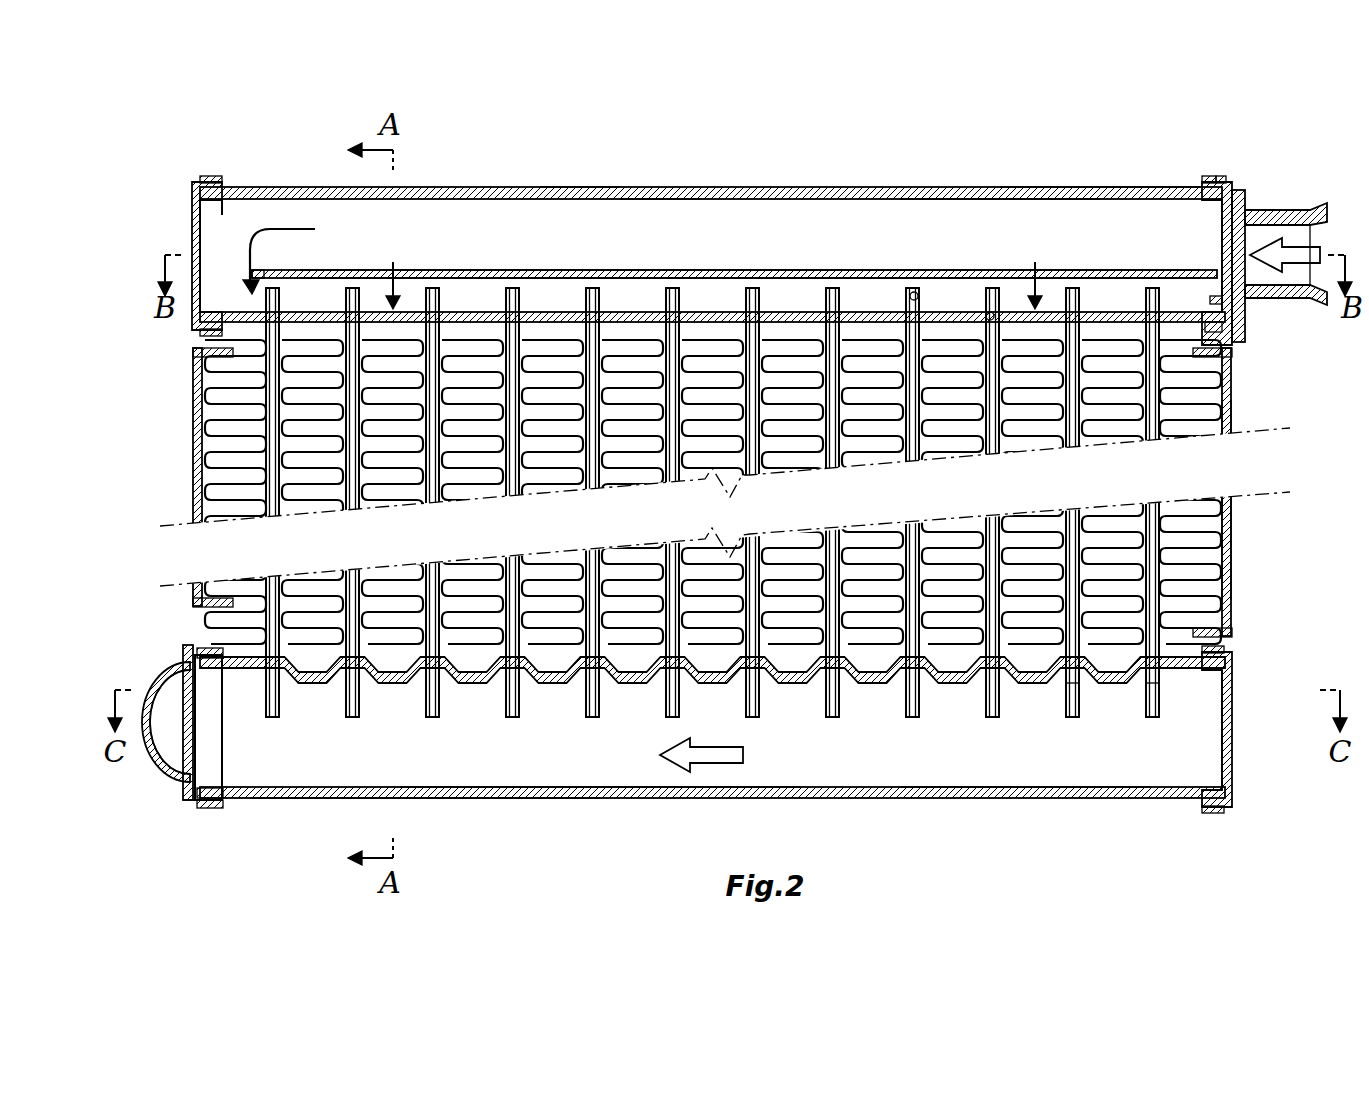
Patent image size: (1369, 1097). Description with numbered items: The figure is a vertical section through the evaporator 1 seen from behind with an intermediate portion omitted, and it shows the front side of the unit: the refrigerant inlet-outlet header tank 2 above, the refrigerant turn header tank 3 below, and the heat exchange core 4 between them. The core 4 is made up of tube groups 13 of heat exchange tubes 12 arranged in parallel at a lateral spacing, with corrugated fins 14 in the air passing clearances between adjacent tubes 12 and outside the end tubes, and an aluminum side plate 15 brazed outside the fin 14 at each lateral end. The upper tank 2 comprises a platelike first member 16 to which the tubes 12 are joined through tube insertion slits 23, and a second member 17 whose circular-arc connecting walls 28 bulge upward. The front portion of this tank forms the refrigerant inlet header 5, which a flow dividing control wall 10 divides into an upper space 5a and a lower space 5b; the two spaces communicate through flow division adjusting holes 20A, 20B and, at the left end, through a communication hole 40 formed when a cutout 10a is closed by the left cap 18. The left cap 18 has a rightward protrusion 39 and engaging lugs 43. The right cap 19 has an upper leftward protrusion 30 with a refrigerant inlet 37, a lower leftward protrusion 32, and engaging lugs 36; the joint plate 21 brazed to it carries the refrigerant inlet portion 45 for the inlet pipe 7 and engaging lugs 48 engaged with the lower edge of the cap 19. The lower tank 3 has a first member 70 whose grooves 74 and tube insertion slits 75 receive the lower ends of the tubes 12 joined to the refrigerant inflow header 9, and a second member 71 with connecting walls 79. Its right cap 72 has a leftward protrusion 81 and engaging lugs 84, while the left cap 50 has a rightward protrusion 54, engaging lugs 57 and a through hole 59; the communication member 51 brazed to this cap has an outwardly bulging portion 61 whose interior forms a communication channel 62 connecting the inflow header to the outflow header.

The evaporator 1 is at (1052, 155).
The refrigerant inlet-outlet header tank 2 is at (790, 187).
The refrigerant turn header tank 3 is at (562, 818).
The heat exchange core 4 is at (1214, 574).
The refrigerant inlet header 5 is at (477, 256).
The upper space 5a is at (652, 200).
The lower space 5b is at (535, 290).
The refrigerant inlet pipe 7 is at (1318, 210).
The refrigerant inflow header 9 is at (562, 761).
The flow dividing control wall 10 is at (654, 270).
The cutout 10a is at (255, 272).
The heat exchange tubes 12 is at (832, 718).
The tube groups 13 is at (1288, 546).
The corrugated fins 14 is at (1195, 428).
The side plate 15 is at (194, 430).
The first member 16 is at (790, 323).
The second member 17 is at (962, 136).
The left cap 18 is at (197, 180).
The right cap 19 is at (1206, 178).
The flow division adjusting through hole 20A is at (380, 260).
The flow division adjusting through hole 20B is at (1045, 264).
The joint plate 21 is at (1241, 192).
The tube insertion slits 23 is at (988, 313).
The connecting walls 28 is at (594, 187).
The upper leftward protrusion 30 is at (1205, 225).
The lower leftward protrusion 32 is at (1204, 324).
The engaging lugs 36 is at (1220, 178).
The refrigerant inlet 37 is at (1212, 215).
The rightward protrusion 39 is at (222, 212).
The communication hole 40 is at (200, 248).
The engaging lugs 43 is at (208, 176).
The refrigerant inlet portion 45 is at (1262, 300).
The engaging lugs 48 is at (1226, 344).
The left cap 50 is at (226, 889).
The communication member 51 is at (187, 800).
The rightward protrusion 54 is at (224, 700).
The engaging lugs 57 is at (215, 650).
The through hole 59 is at (225, 795).
The outwardly bulging portion 61 is at (152, 755).
The communication channel 62 is at (166, 778).
The first member 70 is at (780, 657).
The second member 71 is at (1035, 798).
The right cap 72 is at (1234, 760).
The grooves 74 is at (948, 672).
The tube insertion slits 75 is at (1150, 684).
The connecting walls 79 is at (620, 798).
The leftward protrusion 81 is at (1208, 770).
The engaging lugs 84 is at (1225, 653).